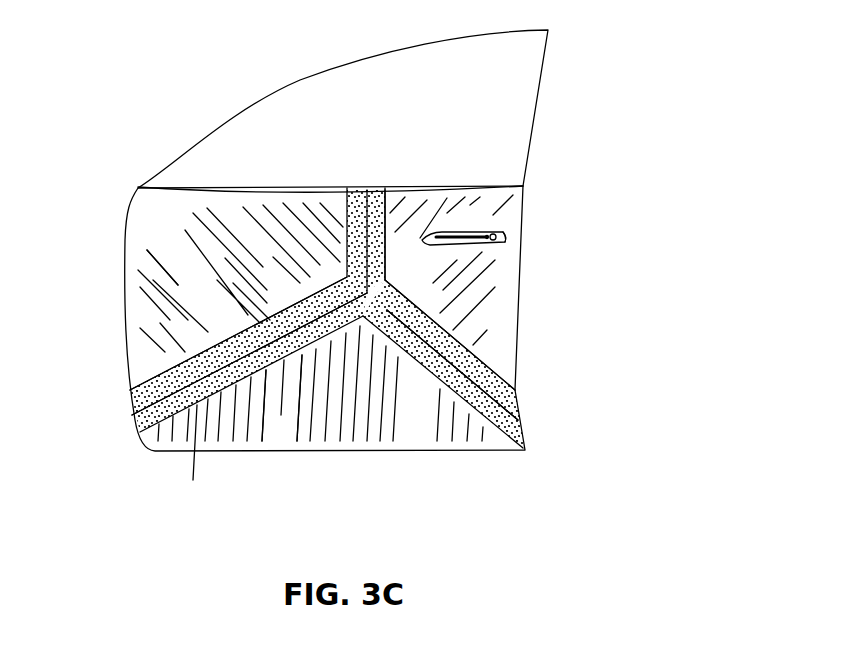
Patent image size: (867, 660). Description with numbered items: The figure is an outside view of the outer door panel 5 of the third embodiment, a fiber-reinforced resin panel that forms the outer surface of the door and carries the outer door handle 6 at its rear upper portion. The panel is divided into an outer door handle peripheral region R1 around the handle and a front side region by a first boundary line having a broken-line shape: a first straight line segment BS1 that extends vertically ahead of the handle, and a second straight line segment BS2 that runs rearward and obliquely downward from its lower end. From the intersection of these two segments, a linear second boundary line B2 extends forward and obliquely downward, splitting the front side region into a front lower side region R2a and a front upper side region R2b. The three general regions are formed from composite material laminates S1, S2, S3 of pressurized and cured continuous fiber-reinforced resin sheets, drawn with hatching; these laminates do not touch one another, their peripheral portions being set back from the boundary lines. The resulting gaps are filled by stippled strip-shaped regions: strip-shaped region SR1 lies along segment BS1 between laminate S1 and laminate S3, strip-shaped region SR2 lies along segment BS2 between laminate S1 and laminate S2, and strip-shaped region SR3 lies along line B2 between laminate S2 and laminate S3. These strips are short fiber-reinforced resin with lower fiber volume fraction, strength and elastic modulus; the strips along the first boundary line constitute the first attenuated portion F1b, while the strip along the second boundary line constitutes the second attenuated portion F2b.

The outer door panel 5 is at (127, 214).
The composite material laminate S3 is at (185, 266).
The front upper side region R2b is at (150, 313).
The strip-shaped region SR3 is at (175, 371).
The second attenuated portion F2b is at (138, 414).
The second boundary line B2 is at (197, 459).
The front lower side region R2a is at (277, 432).
The composite material laminate S2 is at (325, 425).
The strip-shaped region SR2 is at (422, 362).
The second straight line segment BS2 is at (497, 450).
The strip-shaped region SR1 is at (347, 190).
The first straight line segment BS1 is at (368, 188).
The first attenuated portion F1b is at (386, 218).
The outer door handle 6 is at (470, 230).
The outer door handle peripheral region R1 is at (519, 237).
The composite material laminate S1 is at (495, 268).